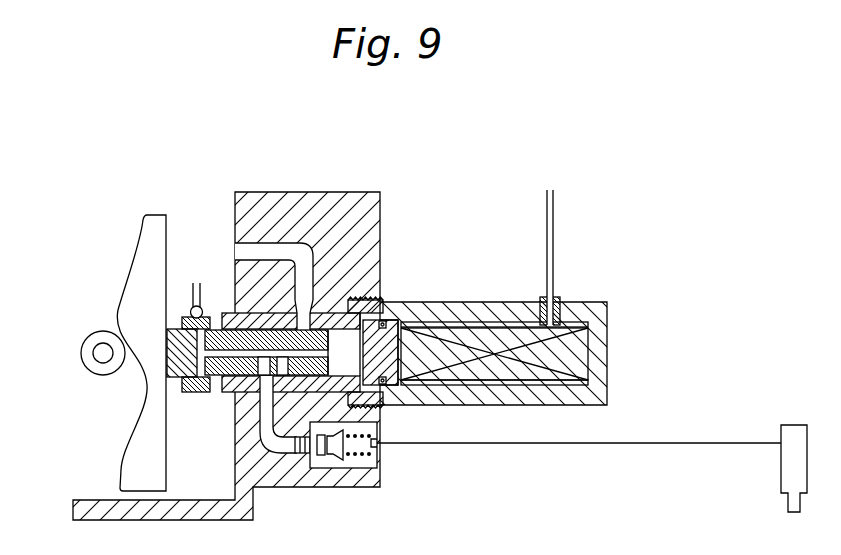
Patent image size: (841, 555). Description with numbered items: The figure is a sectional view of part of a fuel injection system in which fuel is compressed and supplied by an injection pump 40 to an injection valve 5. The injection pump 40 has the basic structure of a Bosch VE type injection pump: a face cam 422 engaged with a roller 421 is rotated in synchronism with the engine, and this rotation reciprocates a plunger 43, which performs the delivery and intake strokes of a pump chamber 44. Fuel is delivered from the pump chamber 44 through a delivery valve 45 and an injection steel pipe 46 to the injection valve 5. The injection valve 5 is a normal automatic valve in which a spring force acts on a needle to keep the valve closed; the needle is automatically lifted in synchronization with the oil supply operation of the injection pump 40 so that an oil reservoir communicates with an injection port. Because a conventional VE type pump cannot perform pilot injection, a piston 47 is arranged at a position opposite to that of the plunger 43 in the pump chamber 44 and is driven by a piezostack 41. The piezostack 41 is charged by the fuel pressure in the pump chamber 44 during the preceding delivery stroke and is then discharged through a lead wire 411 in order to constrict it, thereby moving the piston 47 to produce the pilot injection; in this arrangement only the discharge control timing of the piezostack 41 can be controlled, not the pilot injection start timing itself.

The injection pump 40 is at (316, 207).
The piezostack 41 is at (582, 352).
The plunger 43 is at (243, 321).
The pump chamber 44 is at (348, 343).
The delivery valve 45 is at (302, 455).
The injection steel pipe 46 is at (572, 445).
The piston 47 is at (404, 343).
The lead wire 411 is at (555, 259).
The roller 421 is at (95, 370).
The face cam 422 is at (140, 262).
The injection valve 5 is at (797, 425).